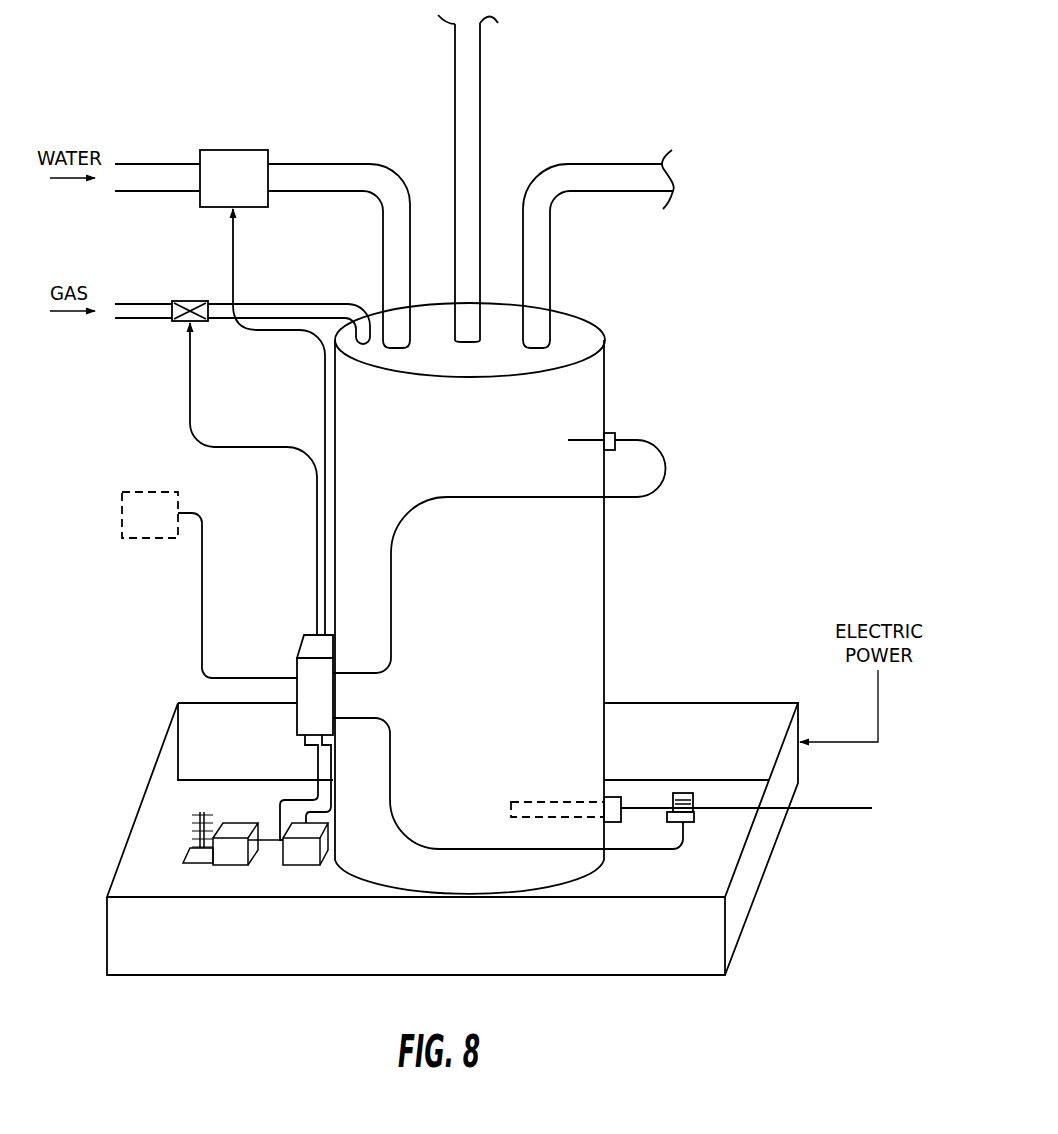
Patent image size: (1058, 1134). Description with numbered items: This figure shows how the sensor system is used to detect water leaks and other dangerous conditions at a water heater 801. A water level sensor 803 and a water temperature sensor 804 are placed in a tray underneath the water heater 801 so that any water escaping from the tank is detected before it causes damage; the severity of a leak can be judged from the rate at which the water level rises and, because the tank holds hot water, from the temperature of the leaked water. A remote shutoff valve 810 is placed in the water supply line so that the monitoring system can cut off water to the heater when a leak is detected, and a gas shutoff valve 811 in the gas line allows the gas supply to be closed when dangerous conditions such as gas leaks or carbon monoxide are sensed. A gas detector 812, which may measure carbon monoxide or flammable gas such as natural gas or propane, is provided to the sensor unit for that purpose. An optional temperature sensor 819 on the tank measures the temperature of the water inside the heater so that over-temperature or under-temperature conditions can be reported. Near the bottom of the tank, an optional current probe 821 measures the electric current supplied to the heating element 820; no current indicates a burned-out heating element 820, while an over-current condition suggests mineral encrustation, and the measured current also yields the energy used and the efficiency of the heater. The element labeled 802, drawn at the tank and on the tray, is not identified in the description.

The water heater 801 is at (604, 574).
The controller / base unit 802 is at (304, 636).
The water level sensor 803 is at (232, 871).
The water temperature sensor 804 is at (302, 868).
The remote shutoff valve 810 is at (249, 150).
The gas shutoff valve 811 is at (178, 301).
The gas detector 812 is at (160, 492).
The temperature sensor 819 is at (609, 433).
The heating element 820 is at (538, 802).
The current probe 821 is at (684, 793).